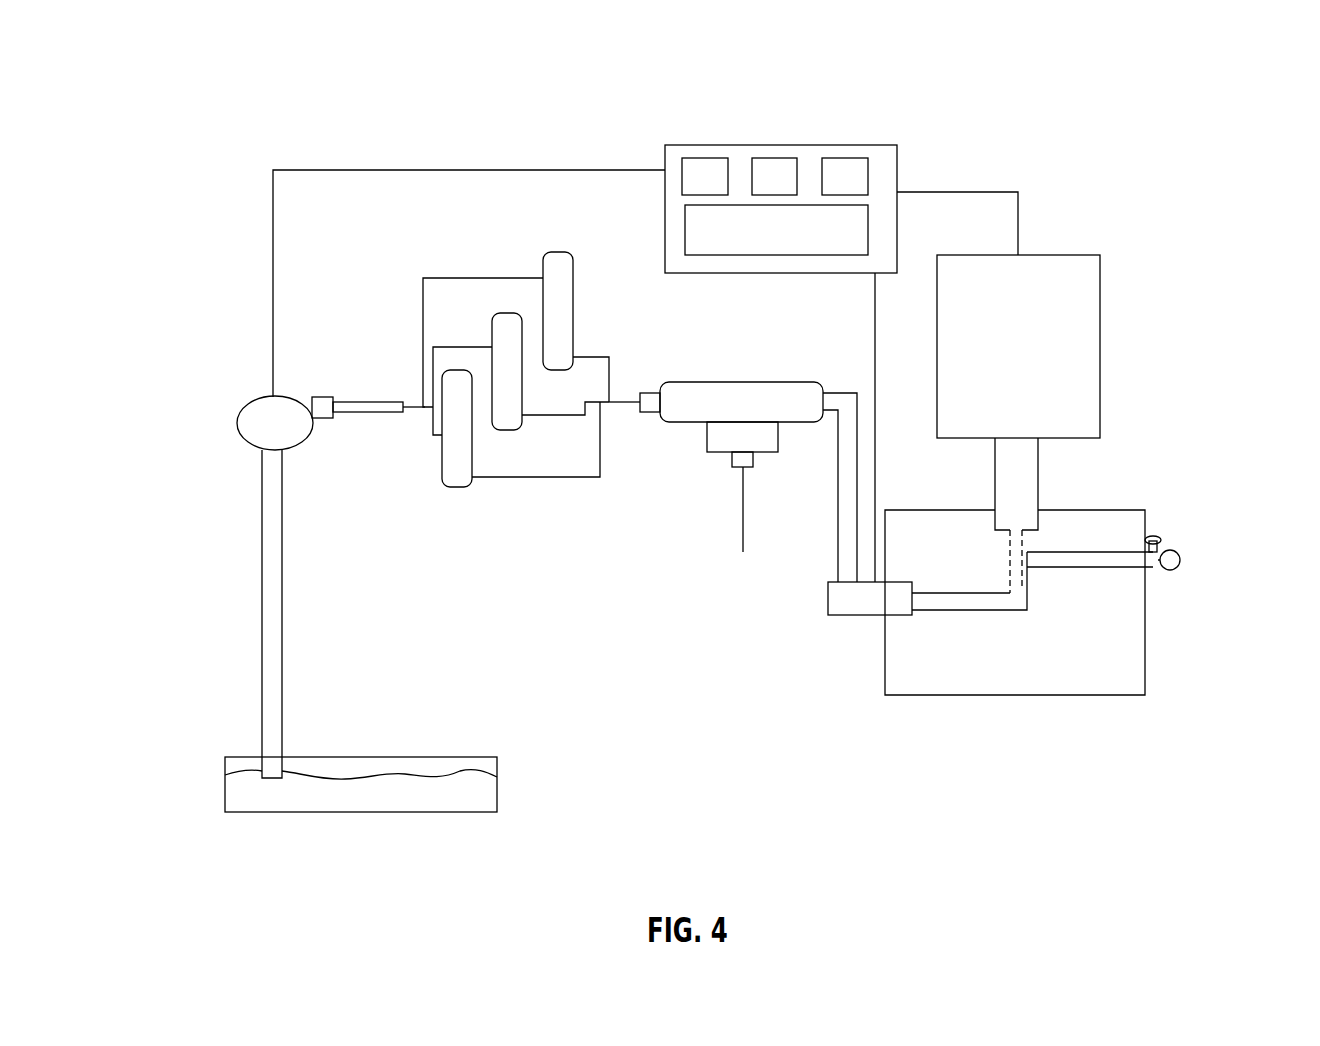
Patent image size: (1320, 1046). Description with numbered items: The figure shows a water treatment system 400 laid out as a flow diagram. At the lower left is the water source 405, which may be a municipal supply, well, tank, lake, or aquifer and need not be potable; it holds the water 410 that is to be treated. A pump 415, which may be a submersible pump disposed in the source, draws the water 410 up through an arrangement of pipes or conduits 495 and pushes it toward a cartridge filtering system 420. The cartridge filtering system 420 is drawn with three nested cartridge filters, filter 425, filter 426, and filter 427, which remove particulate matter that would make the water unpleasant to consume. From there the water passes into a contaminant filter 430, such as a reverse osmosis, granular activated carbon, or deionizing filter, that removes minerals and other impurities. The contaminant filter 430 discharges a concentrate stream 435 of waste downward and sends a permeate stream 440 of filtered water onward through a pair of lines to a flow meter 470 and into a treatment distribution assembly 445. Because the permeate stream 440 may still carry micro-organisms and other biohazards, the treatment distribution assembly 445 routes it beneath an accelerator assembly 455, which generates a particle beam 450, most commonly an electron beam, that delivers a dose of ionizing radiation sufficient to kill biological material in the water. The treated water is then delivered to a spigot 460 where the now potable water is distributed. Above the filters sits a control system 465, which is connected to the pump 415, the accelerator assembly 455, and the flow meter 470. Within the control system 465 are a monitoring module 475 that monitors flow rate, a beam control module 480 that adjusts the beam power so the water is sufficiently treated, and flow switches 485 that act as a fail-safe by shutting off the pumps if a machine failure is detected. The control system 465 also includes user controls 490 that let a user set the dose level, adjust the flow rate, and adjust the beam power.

The water treatment system 400 is at (148, 88).
The water source 405 is at (346, 816).
The water 410 is at (220, 778).
The pump 415 is at (229, 421).
The cartridge filtering system 420 is at (428, 358).
The filter 425 is at (438, 456).
The filter 426 is at (487, 328).
The filter 427 is at (535, 268).
The contaminant filter 430 is at (743, 380).
The concentrate stream 435 is at (738, 501).
The permeate stream 440 is at (834, 463).
The treatment distribution assembly 445 is at (882, 671).
The particle beam 450 is at (1030, 541).
The accelerator assembly 455 is at (1110, 268).
The spigot 460 is at (1186, 560).
The control system 465 is at (905, 155).
The flow meter 470 is at (822, 599).
The monitoring module 475 is at (705, 158).
The beam control module 480 is at (774, 158).
The flow switches 485 is at (843, 158).
The user controls 490 is at (682, 228).
The pipes or conduits 495 is at (257, 600).